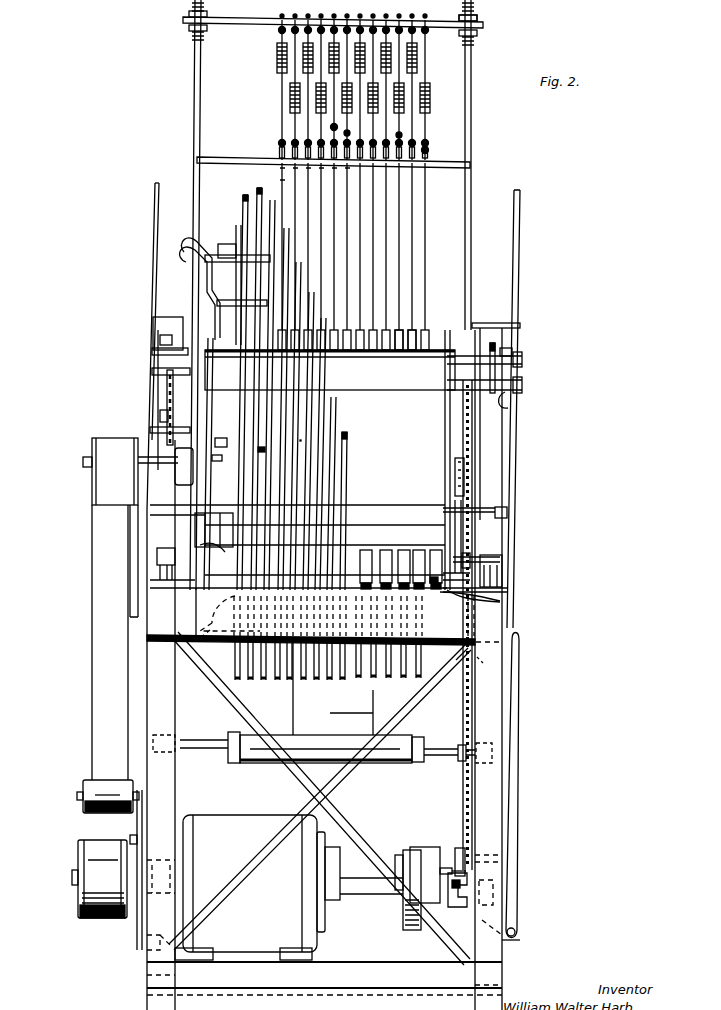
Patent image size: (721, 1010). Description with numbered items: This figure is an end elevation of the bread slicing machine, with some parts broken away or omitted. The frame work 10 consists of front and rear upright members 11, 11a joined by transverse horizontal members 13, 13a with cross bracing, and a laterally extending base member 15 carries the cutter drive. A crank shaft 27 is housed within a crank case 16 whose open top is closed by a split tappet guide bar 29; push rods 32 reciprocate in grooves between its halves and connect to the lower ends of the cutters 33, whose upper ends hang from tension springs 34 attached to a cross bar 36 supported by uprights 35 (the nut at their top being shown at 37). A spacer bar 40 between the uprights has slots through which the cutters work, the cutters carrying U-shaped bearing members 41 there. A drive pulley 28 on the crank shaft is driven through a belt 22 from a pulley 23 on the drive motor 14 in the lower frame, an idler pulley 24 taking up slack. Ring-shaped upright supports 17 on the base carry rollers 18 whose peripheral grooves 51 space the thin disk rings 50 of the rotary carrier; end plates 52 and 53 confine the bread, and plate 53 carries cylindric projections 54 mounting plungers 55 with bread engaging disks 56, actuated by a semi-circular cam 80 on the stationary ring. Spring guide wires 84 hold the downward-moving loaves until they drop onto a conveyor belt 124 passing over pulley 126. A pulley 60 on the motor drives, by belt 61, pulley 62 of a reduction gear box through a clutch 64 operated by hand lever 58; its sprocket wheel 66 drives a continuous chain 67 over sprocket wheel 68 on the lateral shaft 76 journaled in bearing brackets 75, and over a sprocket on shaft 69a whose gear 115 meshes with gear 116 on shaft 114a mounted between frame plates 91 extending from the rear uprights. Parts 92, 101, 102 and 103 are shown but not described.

The frame work 10 is at (166, 711).
The front upright members 11 is at (324, 663).
The rear upright members 11a is at (336, 418).
The transverse horizontal members 13 is at (324, 617).
The transverse horizontal members 13a is at (324, 978).
The drive motor 14 is at (289, 887).
The base member 15 is at (500, 601).
The crank case 16 is at (347, 449).
The upright supports 17 is at (206, 314).
The rollers 18 is at (428, 522).
The belt 22 is at (115, 642).
The pulley 23 is at (77, 856).
The idler pulley 24 is at (90, 788).
The crank shaft 27 is at (165, 466).
The drive pulley 28 is at (88, 472).
The tappet guide bar 29 is at (330, 370).
The push rods 32 is at (405, 336).
The cutters 33 is at (410, 234).
The tension springs 34 is at (279, 98).
The uprights 35 is at (195, 86).
The cross bar 36 is at (376, 21).
The nut 37 is at (482, 29).
The spacer bar 40 is at (226, 157).
The bearing members 41 is at (428, 162).
The disk rings 50 is at (245, 202).
The peripheral grooves 51 is at (383, 550).
The annular side plate 52 is at (456, 656).
The annular side plate 53 is at (240, 232).
The cylindric projection 54 is at (221, 438).
The plunger 55 is at (222, 244).
The bread engaging disk 56 is at (263, 452).
The hand lever 58 is at (518, 798).
The pulley 60 is at (405, 890).
The belt 61 is at (421, 847).
The pulley 62 is at (404, 853).
The clutch 64 is at (458, 900).
The sprocket wheel 66 is at (455, 848).
The continuous chain 67 is at (481, 437).
The sprocket wheel 68 is at (470, 556).
The shaft 69a is at (150, 352).
The bearing brackets 75 is at (500, 584).
The lateral shaft 76 is at (157, 556).
The semi-circular cam 80 is at (200, 268).
The spring guide wires 84 is at (373, 716).
The frame plates 91 is at (153, 233).
The spring 92 is at (150, 372).
The rack 101 is at (165, 416).
The plate 102 is at (160, 398).
The ratchet 103 is at (164, 388).
The shaft 114a is at (165, 338).
The gear 115 is at (522, 363).
The gear 116 is at (496, 343).
The conveyor belt 124 is at (392, 771).
The pulley 126 is at (232, 762).